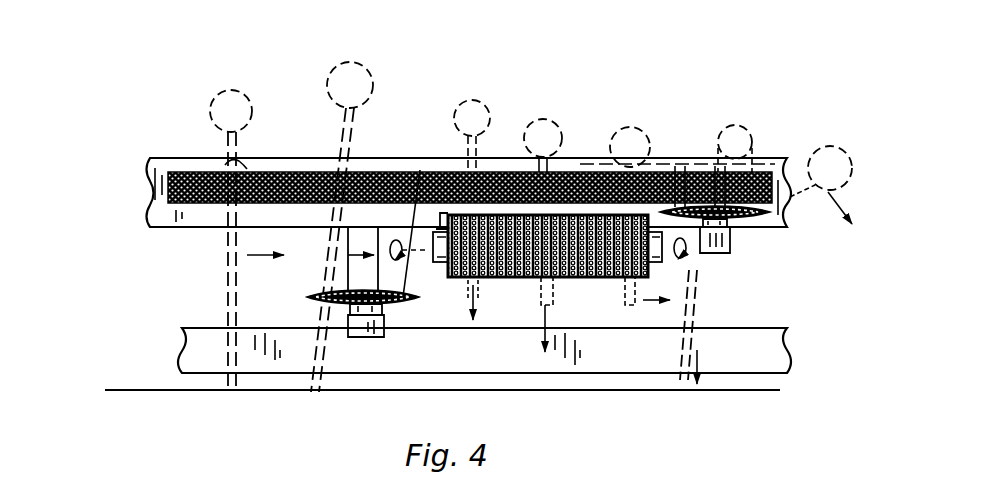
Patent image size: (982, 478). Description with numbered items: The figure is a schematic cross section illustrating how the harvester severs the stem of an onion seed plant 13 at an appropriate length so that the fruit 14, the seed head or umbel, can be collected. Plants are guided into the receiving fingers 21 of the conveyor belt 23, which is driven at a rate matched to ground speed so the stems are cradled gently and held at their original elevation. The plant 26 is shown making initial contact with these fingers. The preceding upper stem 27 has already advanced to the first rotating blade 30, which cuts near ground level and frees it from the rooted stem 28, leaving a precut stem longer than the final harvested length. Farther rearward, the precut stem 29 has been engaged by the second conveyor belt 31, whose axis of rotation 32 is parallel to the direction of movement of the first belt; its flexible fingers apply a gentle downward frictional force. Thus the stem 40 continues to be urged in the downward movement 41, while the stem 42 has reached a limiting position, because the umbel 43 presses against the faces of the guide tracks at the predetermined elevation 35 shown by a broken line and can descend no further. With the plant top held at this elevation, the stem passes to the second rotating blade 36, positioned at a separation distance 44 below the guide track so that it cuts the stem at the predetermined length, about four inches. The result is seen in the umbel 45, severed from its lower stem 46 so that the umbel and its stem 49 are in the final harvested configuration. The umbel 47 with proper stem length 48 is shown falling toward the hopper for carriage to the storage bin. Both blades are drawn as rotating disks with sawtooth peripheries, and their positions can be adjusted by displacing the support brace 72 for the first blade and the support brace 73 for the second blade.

The onion seed plant 13 is at (226, 297).
The fruit 14 is at (232, 108).
The fingers 21 is at (178, 172).
The conveyor belt 23 is at (200, 172).
The plant 26 is at (238, 165).
The upper stem 27 is at (355, 114).
The rooted stem 28 is at (320, 392).
The precut stem 29 is at (480, 130).
The first rotating blade 30 is at (420, 170).
The second conveyor belt 31 is at (486, 282).
The axis of rotation 32 is at (694, 256).
The predetermined elevation 35 is at (674, 166).
The second rotating blade 36 is at (692, 166).
The stem 40 is at (556, 162).
The downward movement 41 is at (560, 333).
The stem 42 is at (630, 213).
The umbel 43 is at (630, 136).
The separation distance 44 is at (620, 282).
The umbel 45 is at (744, 140).
The lower stem 46 is at (685, 319).
The umbel 47 is at (830, 158).
The stem length 48 is at (814, 190).
The stem 49 is at (789, 196).
The support brace 72 is at (385, 340).
The support brace 73 is at (730, 244).